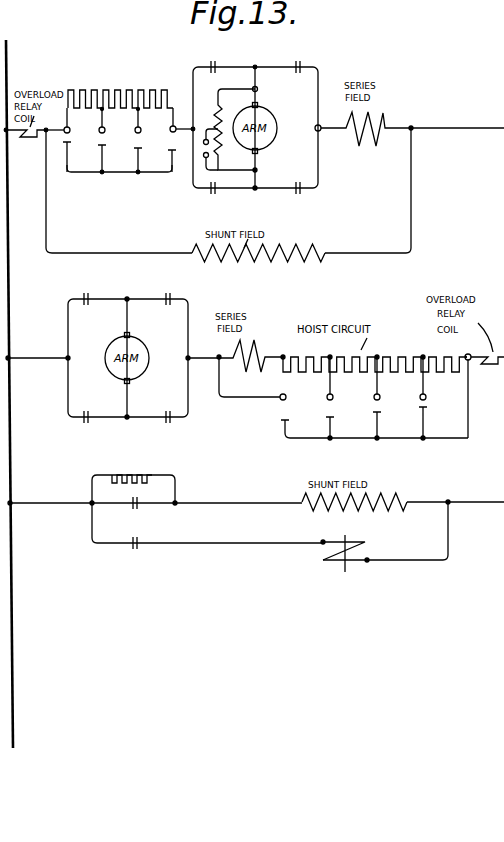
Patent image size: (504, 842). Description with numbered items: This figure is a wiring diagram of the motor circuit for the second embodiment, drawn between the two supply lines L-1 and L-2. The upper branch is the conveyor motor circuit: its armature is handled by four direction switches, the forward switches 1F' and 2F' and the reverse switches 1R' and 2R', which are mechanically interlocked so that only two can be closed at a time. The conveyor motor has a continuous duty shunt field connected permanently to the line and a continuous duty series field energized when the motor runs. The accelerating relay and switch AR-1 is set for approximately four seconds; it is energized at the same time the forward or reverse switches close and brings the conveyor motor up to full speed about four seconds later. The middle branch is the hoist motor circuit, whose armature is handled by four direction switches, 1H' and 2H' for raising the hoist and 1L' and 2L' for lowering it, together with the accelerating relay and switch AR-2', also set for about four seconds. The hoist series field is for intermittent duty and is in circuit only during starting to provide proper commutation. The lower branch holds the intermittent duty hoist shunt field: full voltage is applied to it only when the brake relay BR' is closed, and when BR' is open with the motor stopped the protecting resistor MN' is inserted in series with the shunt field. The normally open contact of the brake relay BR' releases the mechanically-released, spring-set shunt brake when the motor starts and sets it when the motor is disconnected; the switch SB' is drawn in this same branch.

The supply line L-1 is at (14, 40).
The supply line L-2 is at (457, 81).
The forward direction switch 1F' is at (211, 60).
The reverse direction switch 2R' is at (298, 60).
The reverse direction switch 1R' is at (211, 198).
The forward direction switch 2F' is at (297, 198).
The accelerating relay and switch AR-1 is at (119, 158).
The hoist raising direction switch 1H' is at (85, 291).
The hoist lowering direction switch 2L' is at (165, 291).
The hoist lowering direction switch 1L' is at (86, 428).
The hoist raising direction switch 2H' is at (167, 428).
The accelerating relay and switch AR-2' is at (374, 400).
The protecting resistor MN' is at (133, 482).
The brake relay BR' is at (207, 526).
The switch SB' is at (347, 547).